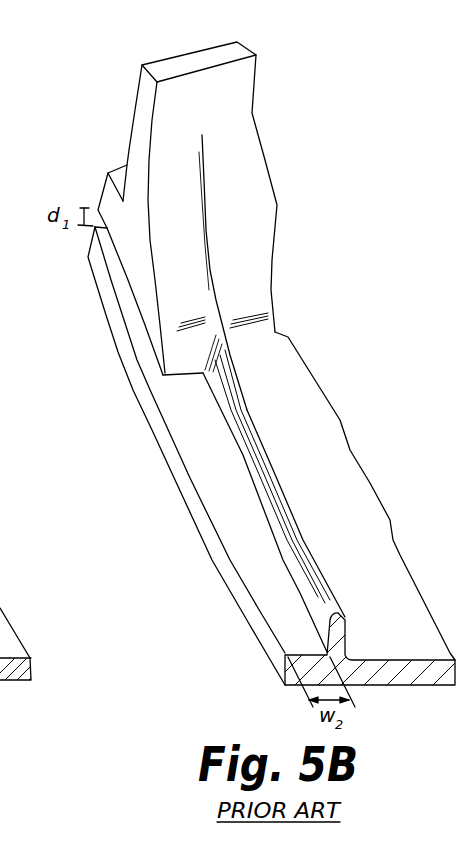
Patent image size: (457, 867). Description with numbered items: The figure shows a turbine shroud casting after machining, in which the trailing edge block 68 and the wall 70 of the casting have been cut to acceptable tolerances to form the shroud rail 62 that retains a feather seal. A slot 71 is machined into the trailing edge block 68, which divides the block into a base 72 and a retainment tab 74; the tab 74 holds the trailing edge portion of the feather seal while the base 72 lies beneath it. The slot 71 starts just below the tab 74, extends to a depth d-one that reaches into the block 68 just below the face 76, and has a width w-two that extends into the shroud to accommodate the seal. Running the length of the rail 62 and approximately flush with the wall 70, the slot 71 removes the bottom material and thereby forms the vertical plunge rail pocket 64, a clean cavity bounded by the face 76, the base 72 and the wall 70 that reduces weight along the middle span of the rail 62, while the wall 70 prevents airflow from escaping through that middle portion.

The shroud rail 62 is at (262, 630).
The plunge rail pocket 64 is at (216, 480).
The trailing edge block 68 is at (185, 248).
The wall 70 is at (273, 472).
The slot 71 is at (133, 348).
The base 72 is at (182, 413).
The retainment tab 74 is at (147, 285).
The face 76 is at (183, 353).